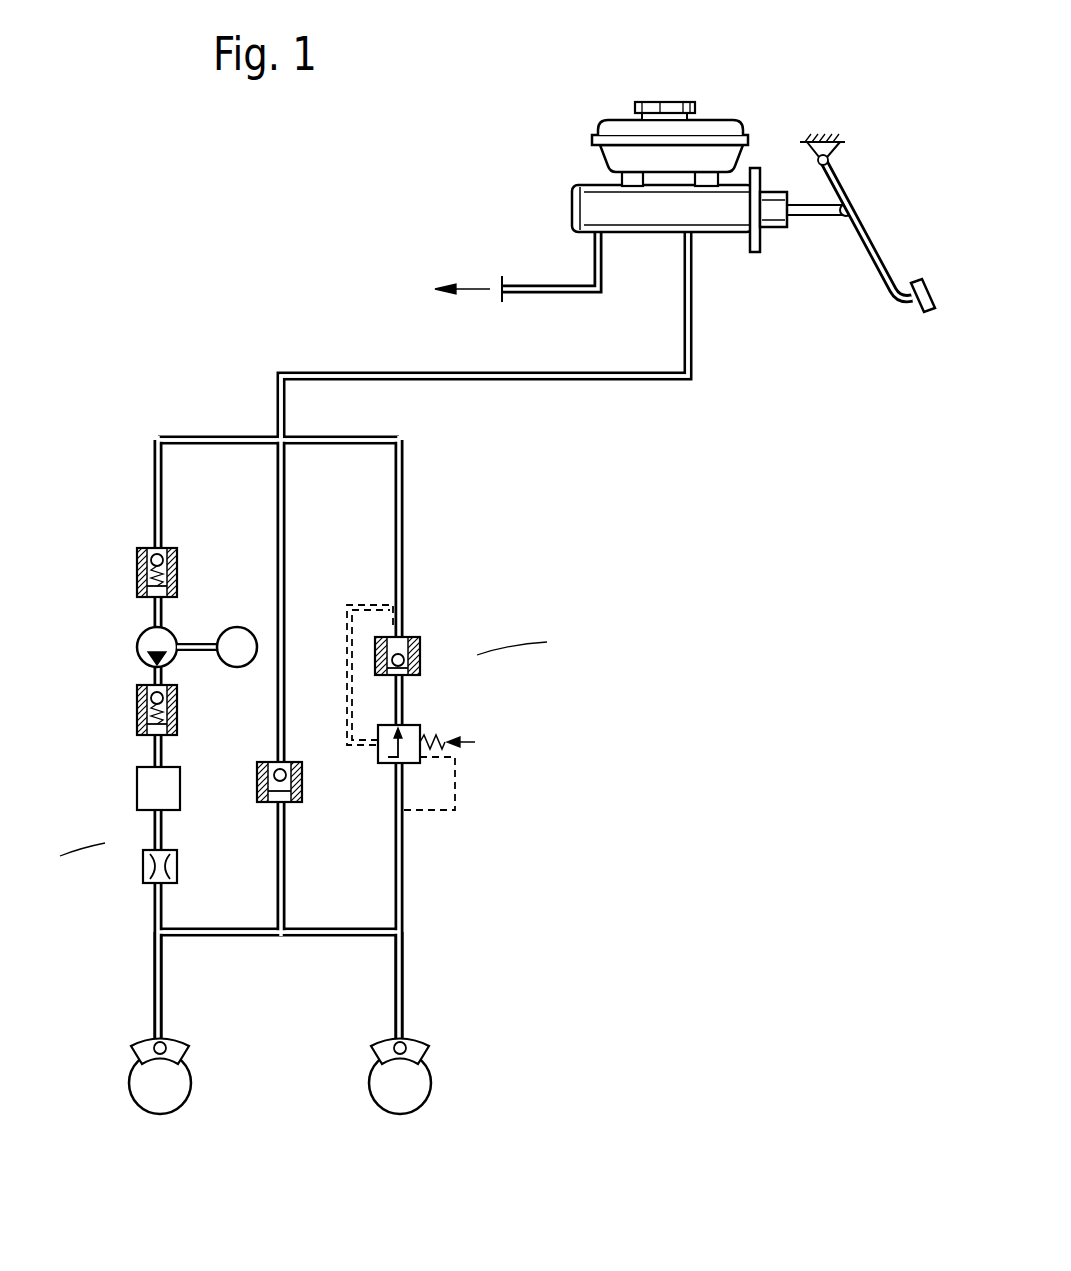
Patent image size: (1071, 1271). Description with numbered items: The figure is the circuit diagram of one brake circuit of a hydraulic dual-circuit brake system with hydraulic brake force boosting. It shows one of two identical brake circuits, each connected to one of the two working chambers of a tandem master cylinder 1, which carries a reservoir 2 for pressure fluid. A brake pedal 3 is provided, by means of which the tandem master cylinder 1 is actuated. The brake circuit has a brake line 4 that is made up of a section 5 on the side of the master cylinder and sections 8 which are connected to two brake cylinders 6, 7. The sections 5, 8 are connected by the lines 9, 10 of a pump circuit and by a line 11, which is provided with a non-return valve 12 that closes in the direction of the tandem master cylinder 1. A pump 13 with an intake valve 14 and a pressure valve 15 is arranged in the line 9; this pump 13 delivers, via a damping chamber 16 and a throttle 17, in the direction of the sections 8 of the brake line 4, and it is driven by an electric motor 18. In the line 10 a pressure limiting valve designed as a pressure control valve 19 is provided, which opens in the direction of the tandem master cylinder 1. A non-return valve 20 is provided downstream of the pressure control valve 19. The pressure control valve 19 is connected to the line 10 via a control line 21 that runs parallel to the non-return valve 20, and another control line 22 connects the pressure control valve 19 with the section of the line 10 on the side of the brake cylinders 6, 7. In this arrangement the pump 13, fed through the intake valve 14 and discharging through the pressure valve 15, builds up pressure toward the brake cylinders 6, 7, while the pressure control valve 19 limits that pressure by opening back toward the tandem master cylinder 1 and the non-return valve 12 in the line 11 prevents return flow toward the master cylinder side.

The tandem master cylinder 1 is at (717, 212).
The reservoir 2 is at (722, 130).
The brake pedal 3 is at (888, 292).
The brake line 4 is at (650, 381).
The section 5 is at (492, 374).
The brake cylinder 6 is at (147, 1050).
The brake cylinder 7 is at (417, 1048).
The sections 8 is at (163, 978).
The line 9 is at (154, 475).
The line 10 is at (404, 503).
The line 11 is at (286, 497).
The non-return valve 12 is at (257, 777).
The pump 13 is at (150, 638).
The intake valve 14 is at (135, 570).
The pressure valve 15 is at (135, 708).
The damping chamber 16 is at (150, 787).
The throttle 17 is at (140, 867).
The electric motor 18 is at (233, 627).
The pressure control valve 19 is at (475, 742).
The non-return valve 20 is at (422, 655).
The control line 21 is at (380, 602).
The control line 22 is at (438, 813).